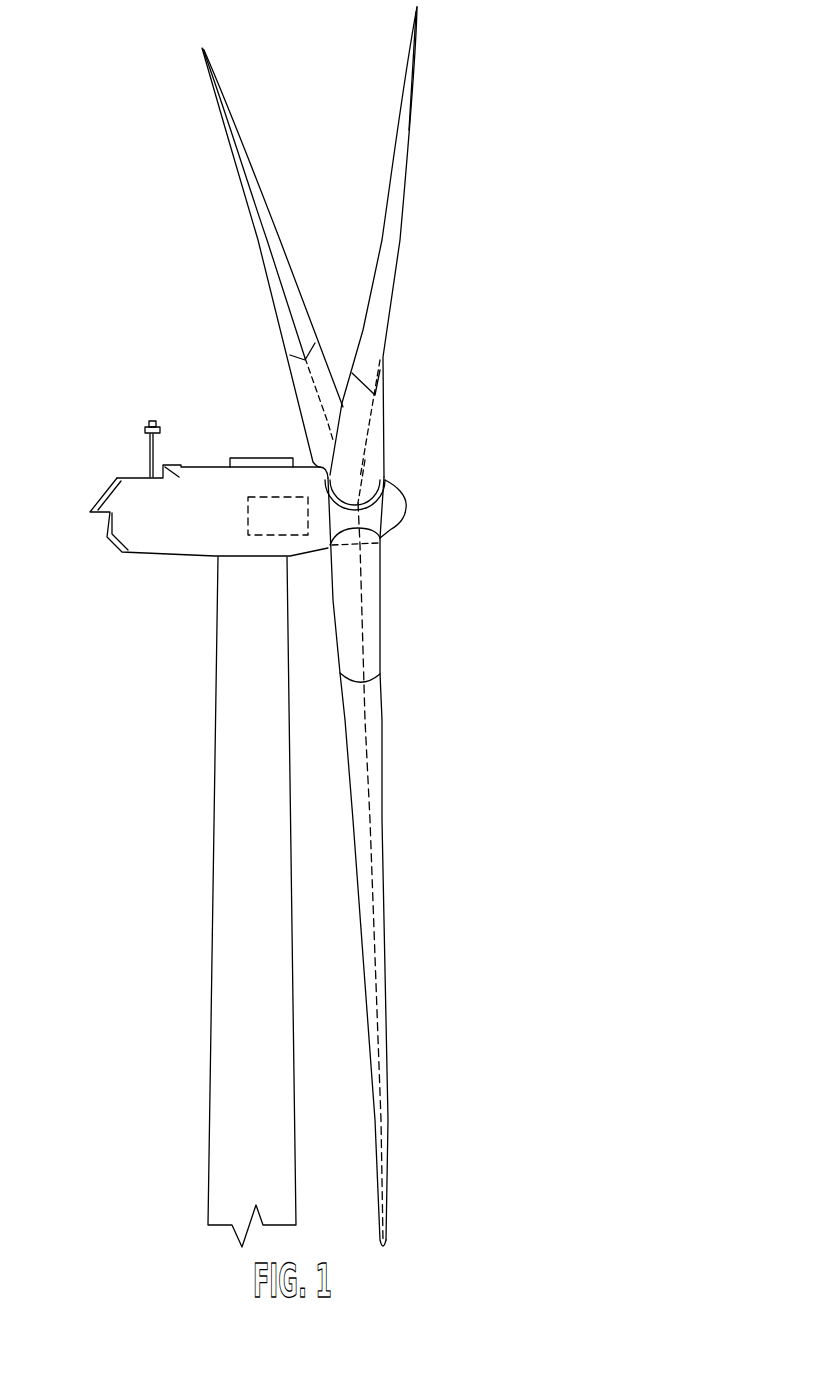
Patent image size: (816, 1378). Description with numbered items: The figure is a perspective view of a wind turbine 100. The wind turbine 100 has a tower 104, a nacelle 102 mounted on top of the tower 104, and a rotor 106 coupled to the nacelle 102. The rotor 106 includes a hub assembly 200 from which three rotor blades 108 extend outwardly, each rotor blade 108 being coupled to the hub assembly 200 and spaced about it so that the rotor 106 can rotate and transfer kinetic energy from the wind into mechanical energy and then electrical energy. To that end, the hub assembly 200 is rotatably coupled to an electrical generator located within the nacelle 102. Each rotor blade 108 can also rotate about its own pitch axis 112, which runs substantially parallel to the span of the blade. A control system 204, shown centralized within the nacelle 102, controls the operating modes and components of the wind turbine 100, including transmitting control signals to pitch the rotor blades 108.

The wind turbine 100 is at (131, 269).
The nacelle 102 is at (177, 555).
The tower 104 is at (215, 785).
The rotor 106 is at (435, 502).
The rotor blade 108 is at (357, 626).
The pitch axis 112 is at (370, 768).
The hub assembly 200 is at (399, 524).
The control system 204 is at (267, 535).